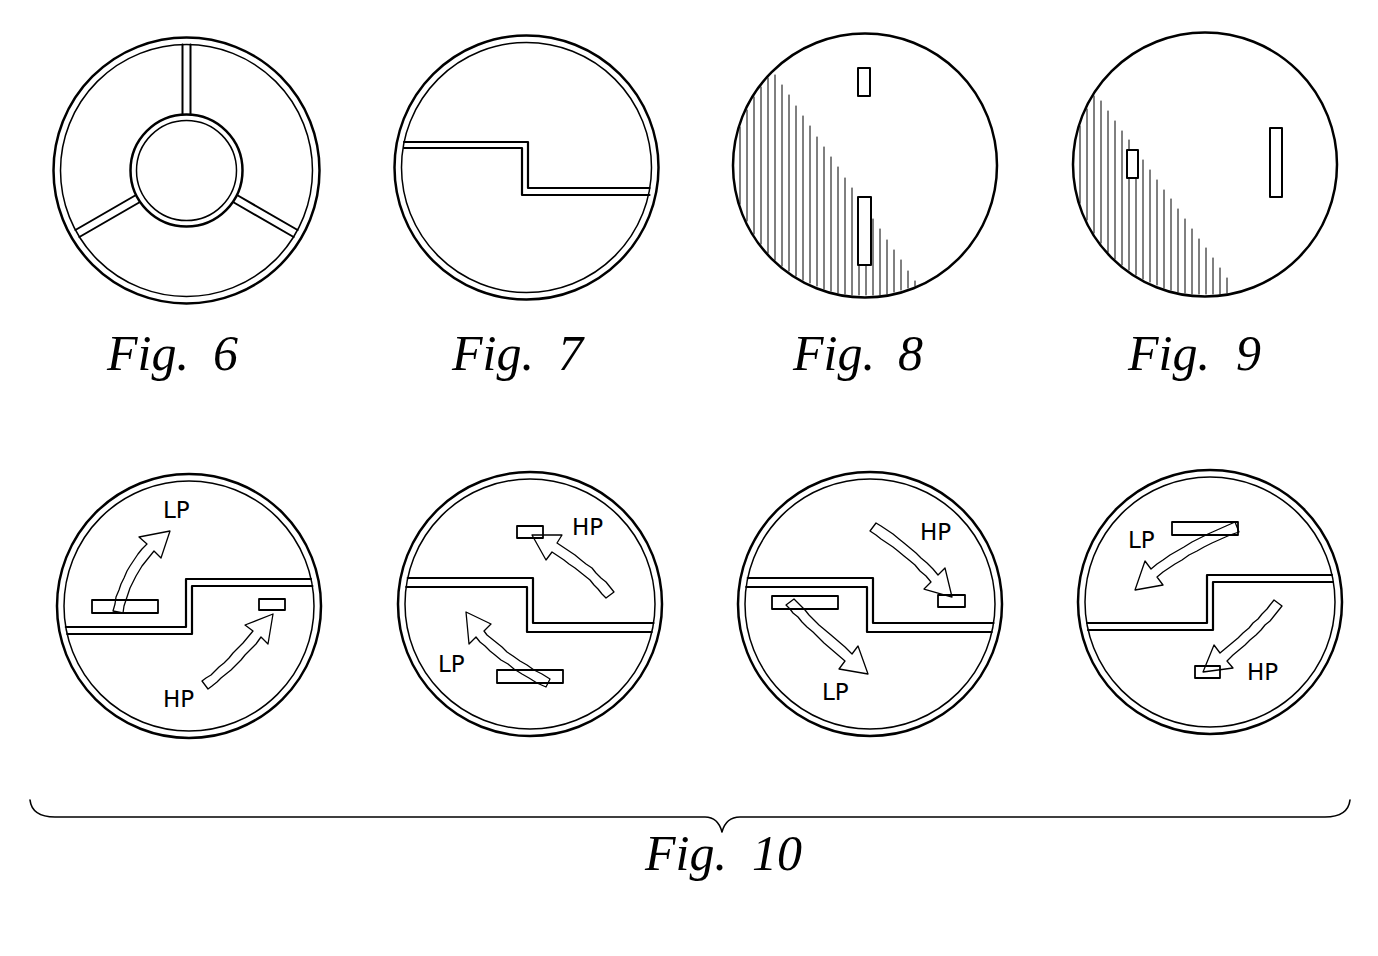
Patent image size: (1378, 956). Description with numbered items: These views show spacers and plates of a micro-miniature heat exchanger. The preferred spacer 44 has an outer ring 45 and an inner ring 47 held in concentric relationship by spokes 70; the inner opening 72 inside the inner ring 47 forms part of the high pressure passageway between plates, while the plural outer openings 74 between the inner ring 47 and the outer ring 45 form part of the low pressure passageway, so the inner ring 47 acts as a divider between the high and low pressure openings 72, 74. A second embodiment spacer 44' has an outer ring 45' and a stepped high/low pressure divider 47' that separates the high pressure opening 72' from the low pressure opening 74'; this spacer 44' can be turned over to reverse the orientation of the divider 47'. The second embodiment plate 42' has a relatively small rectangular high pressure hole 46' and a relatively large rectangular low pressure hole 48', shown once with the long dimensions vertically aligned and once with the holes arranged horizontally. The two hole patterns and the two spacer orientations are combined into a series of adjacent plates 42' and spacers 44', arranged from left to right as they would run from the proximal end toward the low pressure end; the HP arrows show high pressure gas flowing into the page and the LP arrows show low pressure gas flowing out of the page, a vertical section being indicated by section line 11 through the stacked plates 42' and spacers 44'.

In FIG. 6, the spacer 44 is at (61, 293).
In FIG. 6, the outer ring 45 is at (189, 167).
In FIG. 6, the inner ring 47 is at (205, 257).
In FIG. 6, the spokes 70 is at (112, 210).
In FIG. 6, the inner opening 72 is at (206, 169).
In FIG. 6, the outer openings 74 is at (172, 171).
In FIG. 7, the spacer 44' is at (514, 180).
In FIG. 7, the outer ring 45' is at (529, 161).
In FIG. 10, the outer ring 45' is at (699, 595).
In FIG. 7, the high/low pressure divider 47' is at (527, 199).
In FIG. 10, the high/low pressure divider 47' is at (699, 578).
In FIG. 7, the high pressure opening 72' is at (414, 67).
In FIG. 7, the low pressure opening 74' is at (396, 246).
In FIG. 8, the plate 42' is at (871, 161).
In FIG. 9, the plate 42' is at (1217, 165).
In FIG. 10, the plate 42' is at (683, 600).
In FIG. 8, the high pressure hole 46' is at (895, 81).
In FIG. 9, the high pressure hole 46' is at (1164, 161).
In FIG. 8, the low pressure hole 48' is at (896, 231).
In FIG. 9, the low pressure hole 48' is at (1242, 166).
In FIG. 10, the section line 11 is at (188, 453).